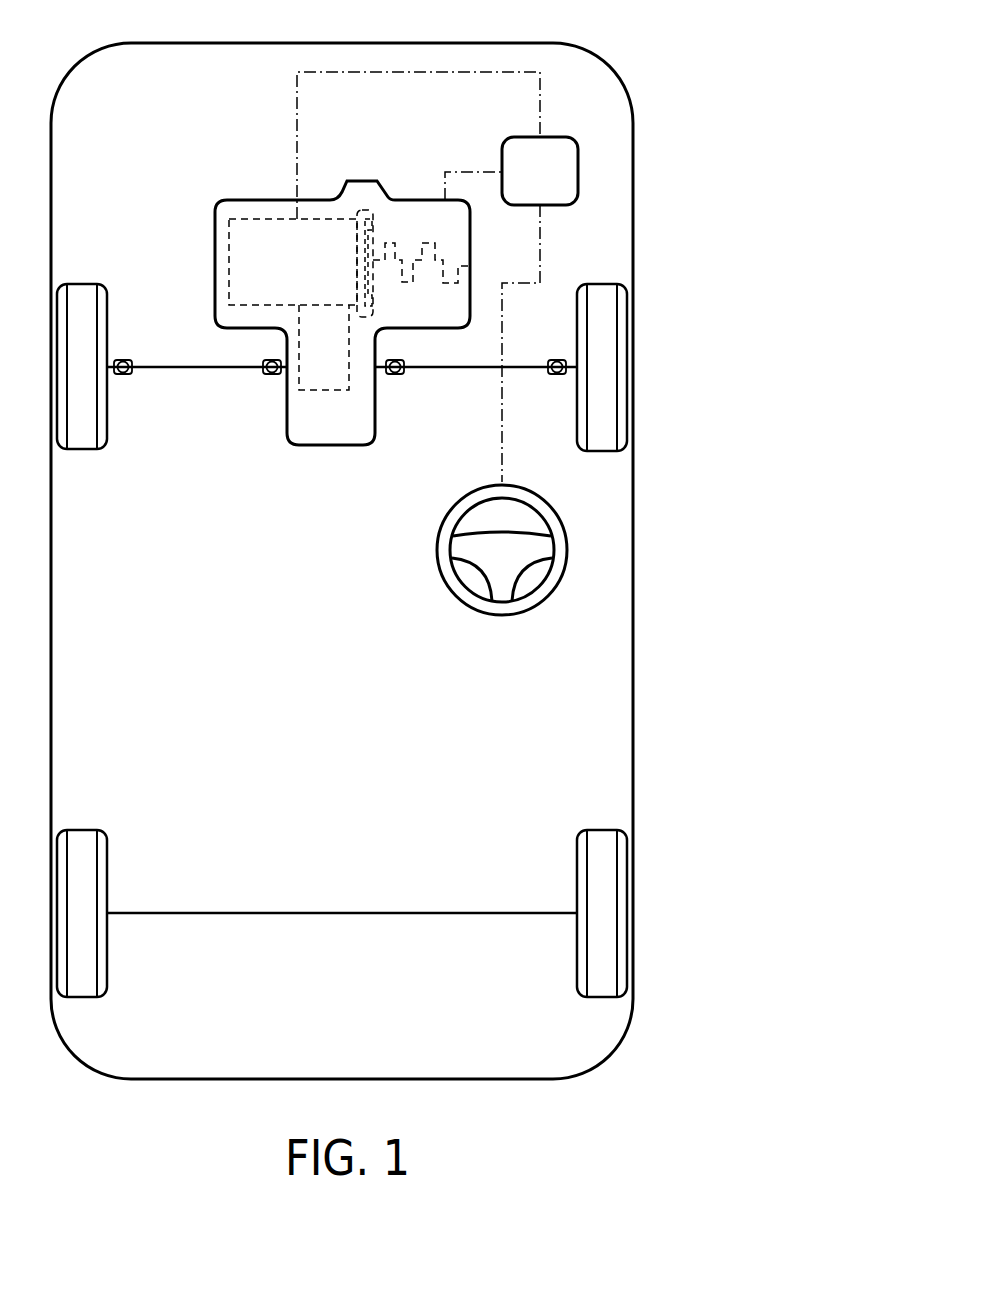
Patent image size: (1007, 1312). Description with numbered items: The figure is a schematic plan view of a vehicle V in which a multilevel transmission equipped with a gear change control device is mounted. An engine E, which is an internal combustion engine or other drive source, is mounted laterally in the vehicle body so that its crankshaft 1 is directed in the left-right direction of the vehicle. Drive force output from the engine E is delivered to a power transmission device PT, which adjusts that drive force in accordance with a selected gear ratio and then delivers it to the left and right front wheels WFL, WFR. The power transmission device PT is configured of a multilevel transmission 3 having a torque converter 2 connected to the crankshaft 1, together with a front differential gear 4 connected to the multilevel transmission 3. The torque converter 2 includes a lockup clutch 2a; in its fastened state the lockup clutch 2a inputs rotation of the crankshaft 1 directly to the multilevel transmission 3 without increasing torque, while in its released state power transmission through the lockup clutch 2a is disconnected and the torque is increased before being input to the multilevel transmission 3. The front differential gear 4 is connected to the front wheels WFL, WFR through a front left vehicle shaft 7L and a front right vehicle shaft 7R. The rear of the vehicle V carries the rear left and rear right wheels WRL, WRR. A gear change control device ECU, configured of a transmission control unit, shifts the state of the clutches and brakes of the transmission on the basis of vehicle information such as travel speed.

The vehicle V is at (604, 56).
The power transmission device PT is at (273, 164).
The engine E is at (417, 197).
The gear change control device ECU is at (567, 184).
The crankshaft 1 is at (405, 284).
The torque converter 2 is at (366, 208).
The lockup clutch 2a is at (373, 216).
The multilevel transmission 3 is at (240, 218).
The front differential gear 4 is at (351, 377).
The front left vehicle shaft 7L is at (225, 370).
The front right vehicle shaft 7R is at (491, 370).
The front left wheel WFL is at (82, 305).
The front right wheel WFR is at (601, 294).
The rear left wheel WRL is at (82, 848).
The rear right wheel WRR is at (601, 846).